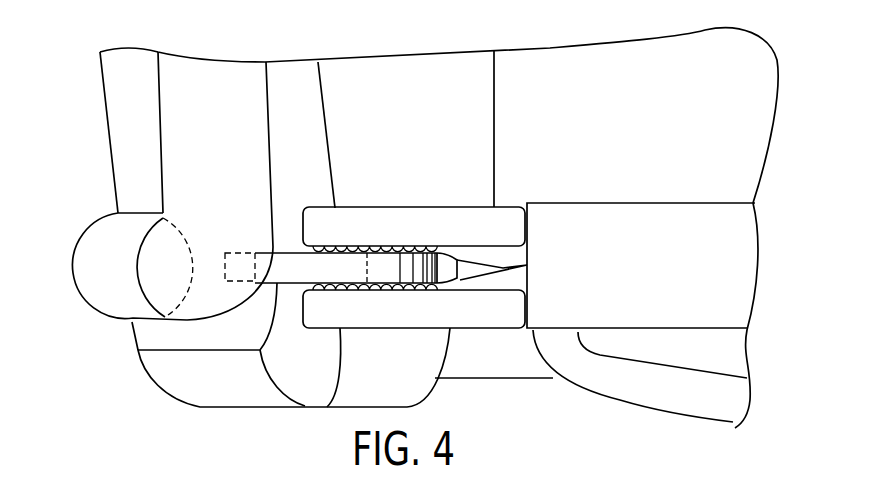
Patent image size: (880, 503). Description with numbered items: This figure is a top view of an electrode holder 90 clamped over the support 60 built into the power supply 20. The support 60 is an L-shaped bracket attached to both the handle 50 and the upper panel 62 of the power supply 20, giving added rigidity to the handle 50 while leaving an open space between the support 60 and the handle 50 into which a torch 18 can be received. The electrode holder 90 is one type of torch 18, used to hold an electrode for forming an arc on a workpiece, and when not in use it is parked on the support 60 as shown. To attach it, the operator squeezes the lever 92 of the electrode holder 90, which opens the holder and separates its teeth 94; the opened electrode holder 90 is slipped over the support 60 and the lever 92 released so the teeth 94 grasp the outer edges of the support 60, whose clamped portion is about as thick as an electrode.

The power supply 20 is at (86, 82).
The handle 50 is at (193, 163).
The upper panel 62 is at (377, 93).
The support 60 is at (382, 270).
The torch 18 is at (641, 227).
The electrode holder 90 is at (609, 183).
The lever 92 is at (668, 390).
The teeth 94 is at (393, 250).